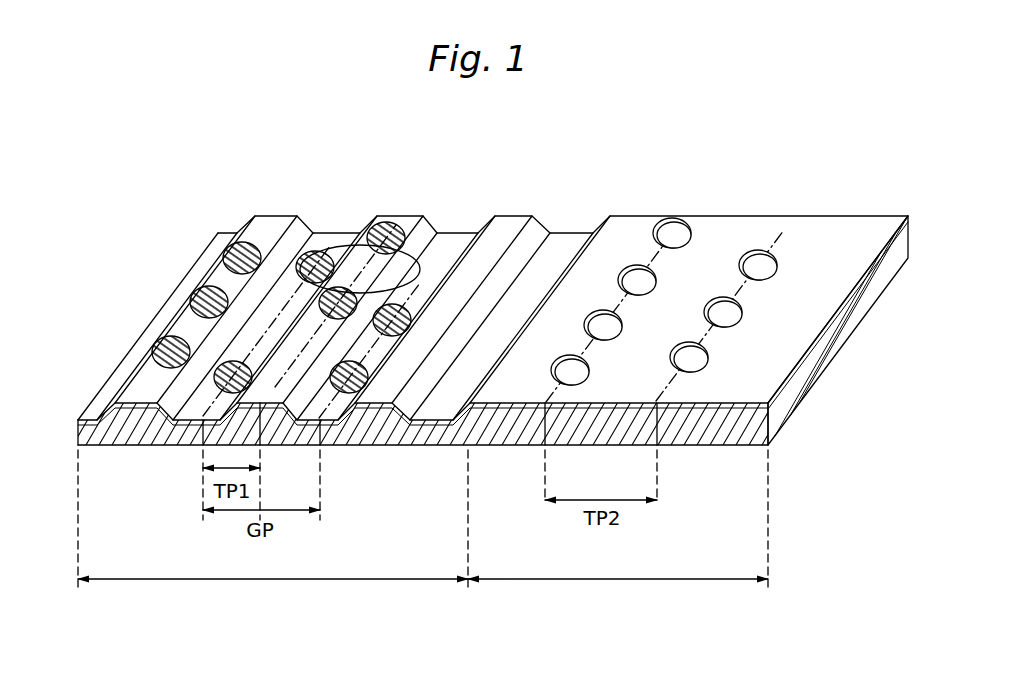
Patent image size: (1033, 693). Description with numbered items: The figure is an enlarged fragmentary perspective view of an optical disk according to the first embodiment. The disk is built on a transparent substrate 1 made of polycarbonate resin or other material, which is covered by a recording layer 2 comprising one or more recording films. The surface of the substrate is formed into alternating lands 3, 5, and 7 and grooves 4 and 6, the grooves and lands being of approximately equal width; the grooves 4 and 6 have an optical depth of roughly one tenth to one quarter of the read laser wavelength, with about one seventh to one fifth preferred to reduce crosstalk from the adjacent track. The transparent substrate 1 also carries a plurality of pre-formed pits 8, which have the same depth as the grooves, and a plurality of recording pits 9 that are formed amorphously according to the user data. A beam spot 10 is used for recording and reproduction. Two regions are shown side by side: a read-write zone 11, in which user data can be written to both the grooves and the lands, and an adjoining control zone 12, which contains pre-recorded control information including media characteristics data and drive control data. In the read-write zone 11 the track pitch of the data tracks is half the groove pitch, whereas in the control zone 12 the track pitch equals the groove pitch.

The transparent substrate 1 is at (795, 388).
The recording layer 2 is at (77, 420).
The land 3 is at (278, 214).
The groove 4 is at (336, 231).
The land 5 is at (392, 213).
The groove 6 is at (457, 231).
The land 7 is at (508, 213).
The pre-formed pits 8 is at (670, 218).
The recording pits 9 is at (195, 300).
The beam spot 10 is at (300, 257).
The read-write zone 11 is at (273, 530).
The control zone 12 is at (618, 530).